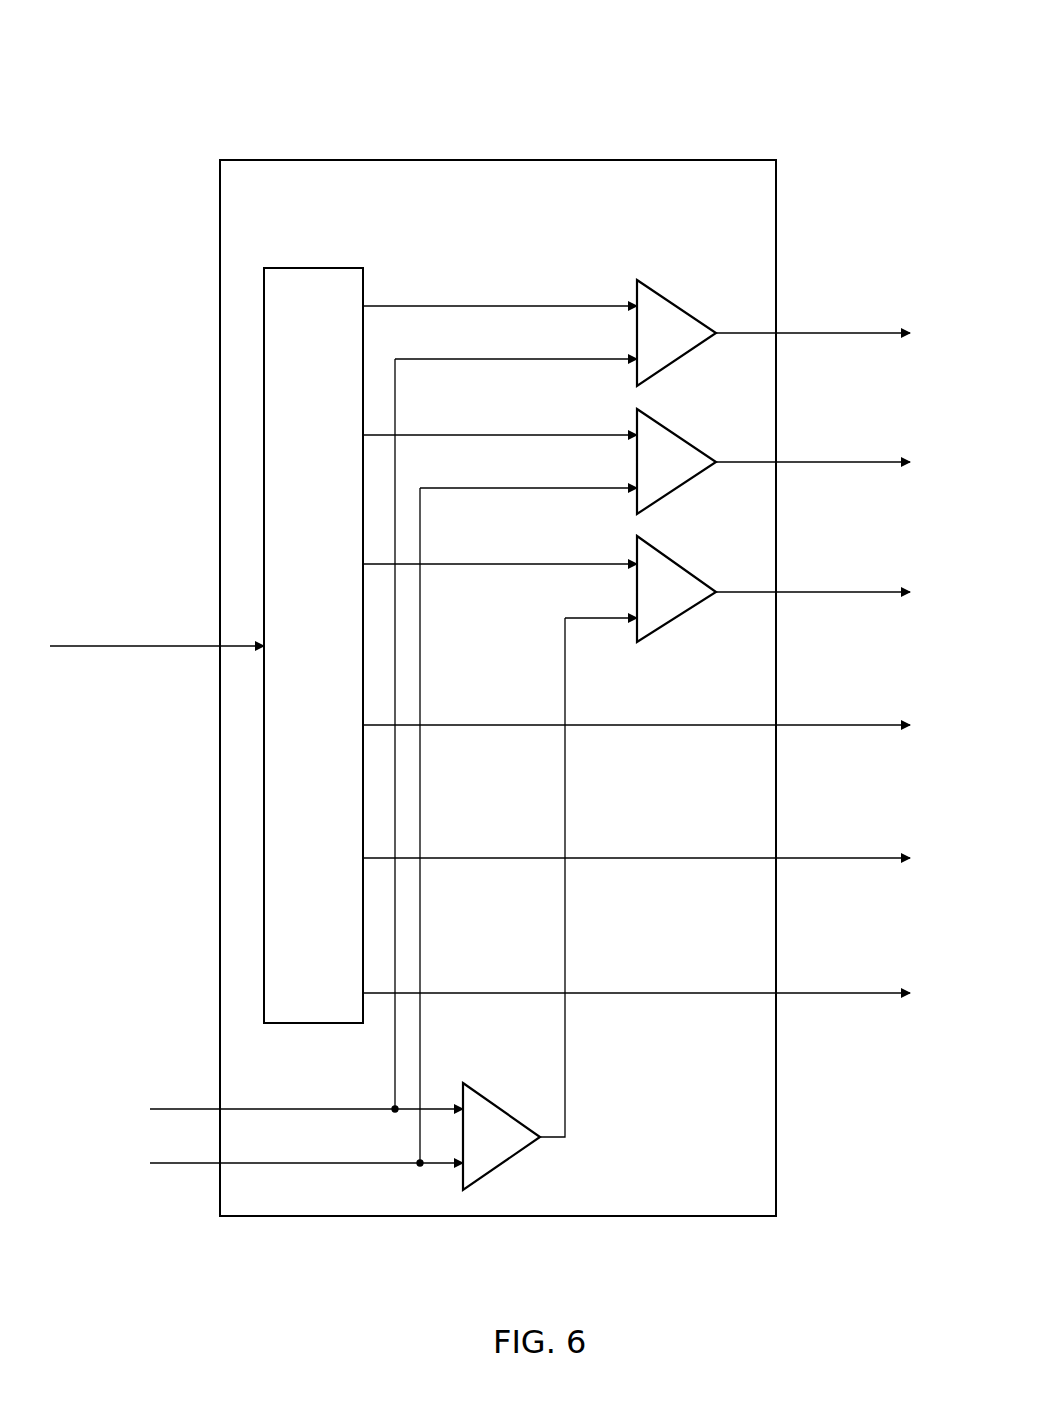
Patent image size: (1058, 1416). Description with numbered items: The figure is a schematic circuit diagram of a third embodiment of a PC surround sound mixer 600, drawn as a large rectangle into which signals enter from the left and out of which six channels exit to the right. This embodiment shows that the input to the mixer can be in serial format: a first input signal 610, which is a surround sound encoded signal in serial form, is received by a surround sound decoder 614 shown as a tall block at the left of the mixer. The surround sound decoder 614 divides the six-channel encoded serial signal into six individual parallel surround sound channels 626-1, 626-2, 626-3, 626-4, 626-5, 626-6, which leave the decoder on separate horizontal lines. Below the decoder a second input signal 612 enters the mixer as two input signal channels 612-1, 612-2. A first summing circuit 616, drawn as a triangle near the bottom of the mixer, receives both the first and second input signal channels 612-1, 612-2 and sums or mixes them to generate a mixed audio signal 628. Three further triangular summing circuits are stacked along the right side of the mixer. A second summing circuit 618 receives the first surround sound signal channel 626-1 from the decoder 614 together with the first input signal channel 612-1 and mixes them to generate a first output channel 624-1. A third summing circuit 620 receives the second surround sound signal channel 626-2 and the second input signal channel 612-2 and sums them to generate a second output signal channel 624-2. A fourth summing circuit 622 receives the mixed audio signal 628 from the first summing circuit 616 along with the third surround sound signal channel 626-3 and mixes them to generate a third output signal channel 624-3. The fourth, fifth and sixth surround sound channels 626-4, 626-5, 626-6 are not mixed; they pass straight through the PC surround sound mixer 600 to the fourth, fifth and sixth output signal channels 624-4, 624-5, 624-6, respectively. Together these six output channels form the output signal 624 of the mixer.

The PC surround sound mixer 600 is at (762, 123).
The first input signal 610 is at (152, 652).
The second input signal 612 is at (168, 1018).
The first input signal channel 612-1 is at (170, 1107).
The second input signal channel 612-2 is at (170, 1168).
The surround sound decoder 614 is at (280, 321).
The first summing circuit 616 is at (512, 1148).
The second summing circuit 618 is at (662, 310).
The third summing circuit 620 is at (662, 440).
The fourth summing circuit 622 is at (662, 570).
The output signal 624 is at (851, 1042).
The first output channel 624-1 is at (840, 330).
The second output signal channel 624-2 is at (840, 460).
The third output signal channel 624-3 is at (840, 590).
The fourth output signal channel 624-4 is at (840, 723).
The fifth output signal channel 624-5 is at (840, 856).
The sixth output signal channel 624-6 is at (840, 991).
The first surround sound signal channel 626-1 is at (418, 303).
The second surround sound signal channel 626-2 is at (428, 433).
The third surround sound signal channel 626-3 is at (470, 568).
The fourth surround sound input signal channel 626-4 is at (470, 729).
The fifth surround sound input signal channel 626-5 is at (470, 862).
The sixth surround sound input signal channel 626-6 is at (470, 997).
The mixed audio signal 628 is at (567, 1076).